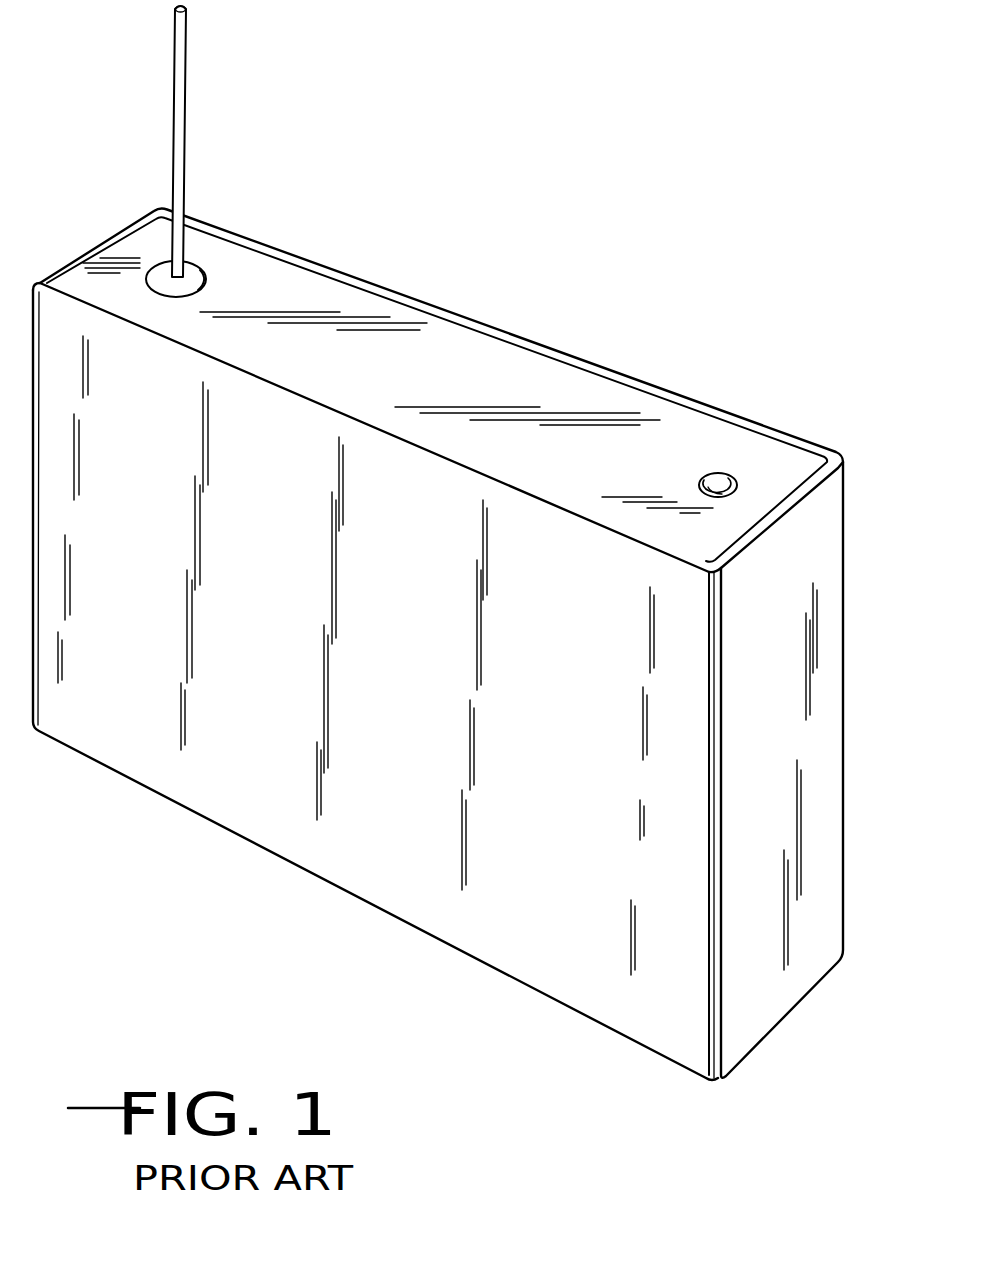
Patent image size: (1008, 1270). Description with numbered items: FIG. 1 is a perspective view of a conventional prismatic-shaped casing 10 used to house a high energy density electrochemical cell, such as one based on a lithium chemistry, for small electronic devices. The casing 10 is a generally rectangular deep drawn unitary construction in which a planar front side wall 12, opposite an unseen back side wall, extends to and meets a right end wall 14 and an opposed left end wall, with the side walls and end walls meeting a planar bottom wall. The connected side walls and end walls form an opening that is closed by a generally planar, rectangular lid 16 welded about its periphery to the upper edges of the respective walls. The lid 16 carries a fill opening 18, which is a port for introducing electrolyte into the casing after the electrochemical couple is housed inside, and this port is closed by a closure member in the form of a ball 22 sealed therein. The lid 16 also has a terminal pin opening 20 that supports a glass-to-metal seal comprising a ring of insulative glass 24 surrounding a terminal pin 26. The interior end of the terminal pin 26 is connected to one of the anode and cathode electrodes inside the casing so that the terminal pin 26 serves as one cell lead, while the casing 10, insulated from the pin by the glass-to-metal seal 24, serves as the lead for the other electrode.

The prismatic-shaped casing 10 is at (473, 543).
The front side wall 12 is at (363, 860).
The right end wall 14 is at (795, 557).
The lid 16 is at (440, 343).
The fill opening 18 is at (709, 431).
The terminal pin opening 20 is at (221, 231).
The ball 22 is at (705, 480).
The ring of insulative glass 24 is at (198, 278).
The terminal pin 26 is at (186, 86).